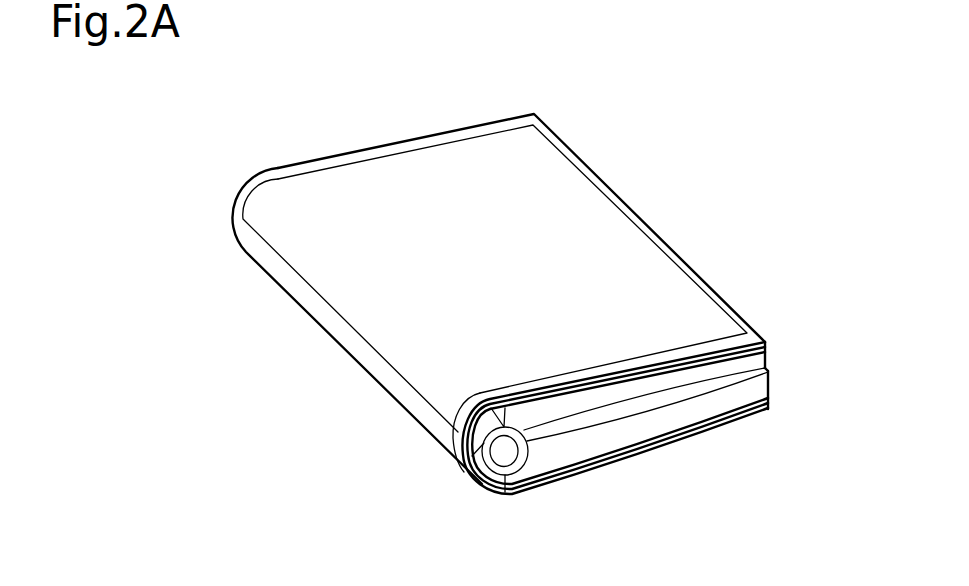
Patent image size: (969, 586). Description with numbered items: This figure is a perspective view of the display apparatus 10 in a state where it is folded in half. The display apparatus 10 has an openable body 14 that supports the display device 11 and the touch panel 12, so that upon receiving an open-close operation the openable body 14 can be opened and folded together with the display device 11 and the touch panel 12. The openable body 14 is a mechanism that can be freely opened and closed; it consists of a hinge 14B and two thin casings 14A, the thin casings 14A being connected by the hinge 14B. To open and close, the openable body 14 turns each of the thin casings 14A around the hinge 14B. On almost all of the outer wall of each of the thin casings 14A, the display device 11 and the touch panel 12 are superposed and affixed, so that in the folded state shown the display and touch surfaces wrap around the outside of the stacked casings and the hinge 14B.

The display apparatus 10 is at (458, 87).
The display device 11 is at (767, 343).
The touch panel 12 is at (749, 326).
The openable body 14 is at (672, 440).
The thin casing 14A is at (767, 356).
The hinge 14B is at (477, 455).